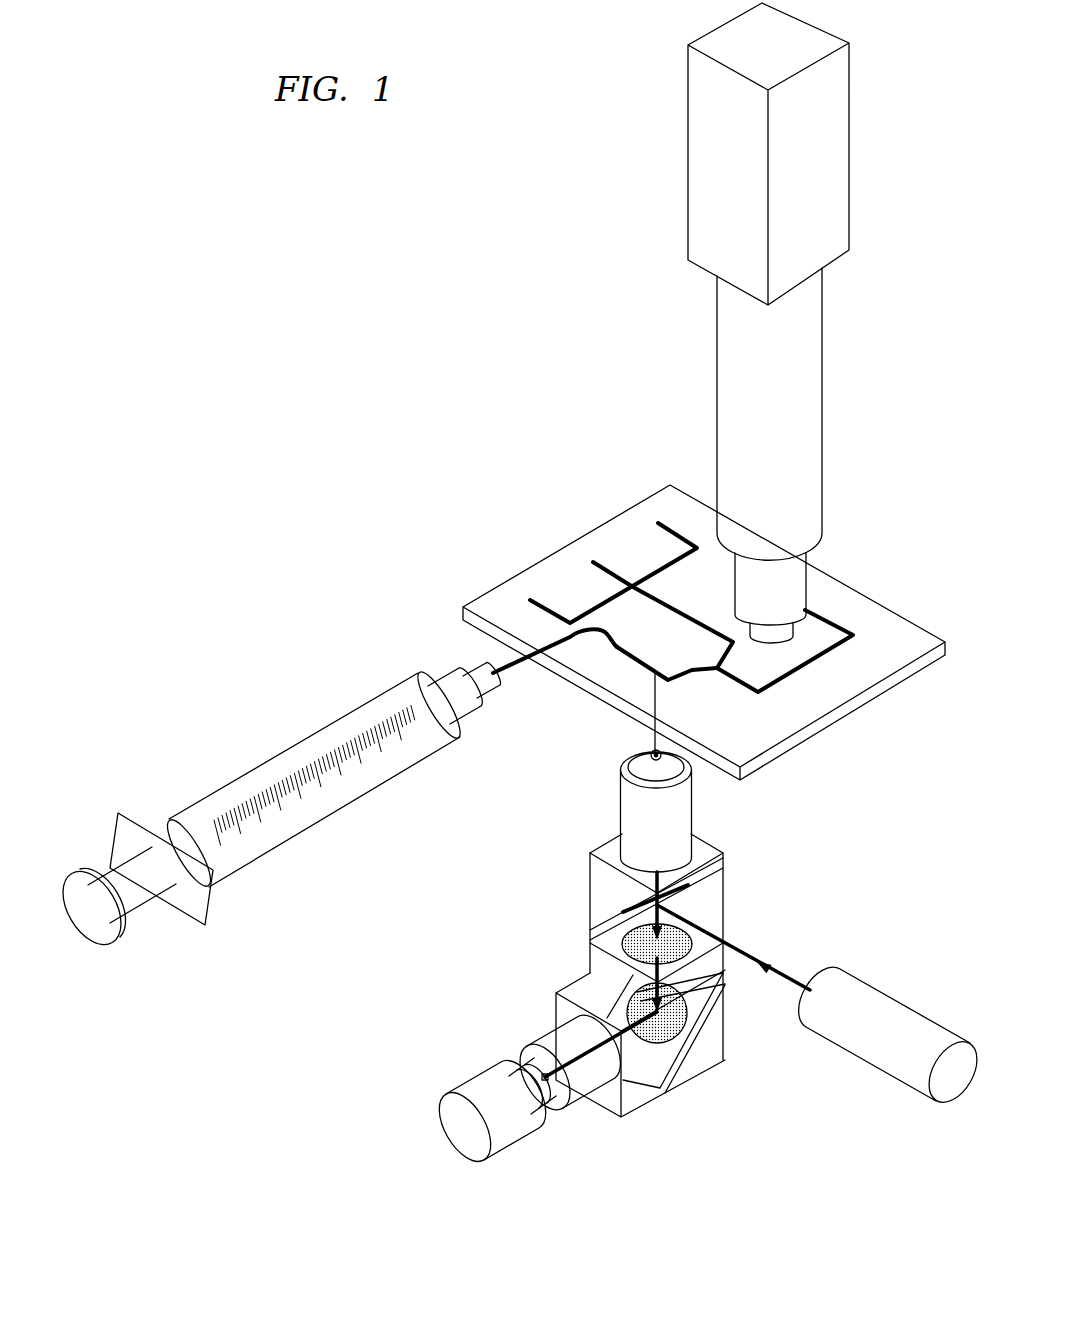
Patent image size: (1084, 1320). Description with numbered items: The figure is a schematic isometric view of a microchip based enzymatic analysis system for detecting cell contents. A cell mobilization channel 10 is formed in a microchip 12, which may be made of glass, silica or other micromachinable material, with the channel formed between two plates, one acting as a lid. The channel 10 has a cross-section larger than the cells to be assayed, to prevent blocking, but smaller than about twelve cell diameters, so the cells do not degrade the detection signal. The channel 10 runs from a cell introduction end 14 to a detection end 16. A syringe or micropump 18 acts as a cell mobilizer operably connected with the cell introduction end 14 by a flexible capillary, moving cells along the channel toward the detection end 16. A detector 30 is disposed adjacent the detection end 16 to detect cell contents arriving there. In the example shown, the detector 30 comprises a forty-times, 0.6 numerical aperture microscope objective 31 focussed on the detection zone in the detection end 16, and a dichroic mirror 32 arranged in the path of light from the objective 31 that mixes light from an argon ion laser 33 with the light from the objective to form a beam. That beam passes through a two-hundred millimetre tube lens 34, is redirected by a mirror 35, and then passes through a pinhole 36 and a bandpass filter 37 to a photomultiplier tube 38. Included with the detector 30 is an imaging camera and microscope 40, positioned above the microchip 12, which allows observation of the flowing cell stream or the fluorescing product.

The cell mobilization channel 10 is at (696, 673).
The microchip 12 is at (922, 673).
The cell introduction end 14 is at (596, 668).
The detection end 16 is at (830, 622).
The syringe or micropump 18 is at (255, 772).
The detector 30 is at (486, 932).
The microscope objective 31 is at (621, 810).
The dichroic mirror 32 is at (627, 902).
The argon ion laser 33 is at (893, 998).
The tube lens 34 is at (622, 946).
The mirror 35 is at (678, 1032).
The pinhole 36 is at (545, 1073).
The bandpass filter 37 is at (547, 1112).
The photomultiplier tube 38 is at (460, 1087).
The imaging camera and microscope 40 is at (688, 215).